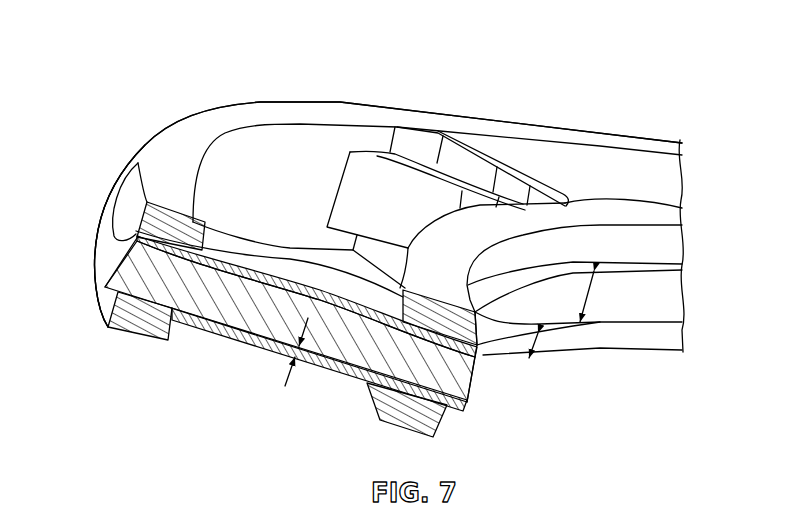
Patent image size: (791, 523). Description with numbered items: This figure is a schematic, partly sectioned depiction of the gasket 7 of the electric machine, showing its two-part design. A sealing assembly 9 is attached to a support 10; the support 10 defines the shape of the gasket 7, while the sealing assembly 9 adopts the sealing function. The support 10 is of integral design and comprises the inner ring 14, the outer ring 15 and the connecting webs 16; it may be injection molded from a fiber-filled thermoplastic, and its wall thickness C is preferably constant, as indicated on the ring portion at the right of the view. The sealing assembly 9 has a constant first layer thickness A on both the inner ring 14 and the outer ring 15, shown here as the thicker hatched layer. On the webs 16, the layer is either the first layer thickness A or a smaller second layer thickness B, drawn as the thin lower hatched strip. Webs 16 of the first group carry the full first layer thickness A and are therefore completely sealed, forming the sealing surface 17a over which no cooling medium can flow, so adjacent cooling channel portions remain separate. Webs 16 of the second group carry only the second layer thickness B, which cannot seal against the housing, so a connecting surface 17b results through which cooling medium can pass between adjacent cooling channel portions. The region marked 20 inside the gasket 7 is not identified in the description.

The gasket 7 is at (118, 90).
The sealing assembly 9 is at (178, 143).
The support 10 is at (99, 211).
The inner ring 14 is at (665, 292).
The outer ring 15 is at (130, 168).
The connecting webs 16 is at (128, 258).
The sealing surface 17a is at (447, 133).
The connecting surface 17b is at (238, 345).
The cavity 20 is at (325, 188).
The first layer thickness A is at (537, 352).
The second layer thickness B is at (318, 372).
The wall thickness C is at (593, 292).